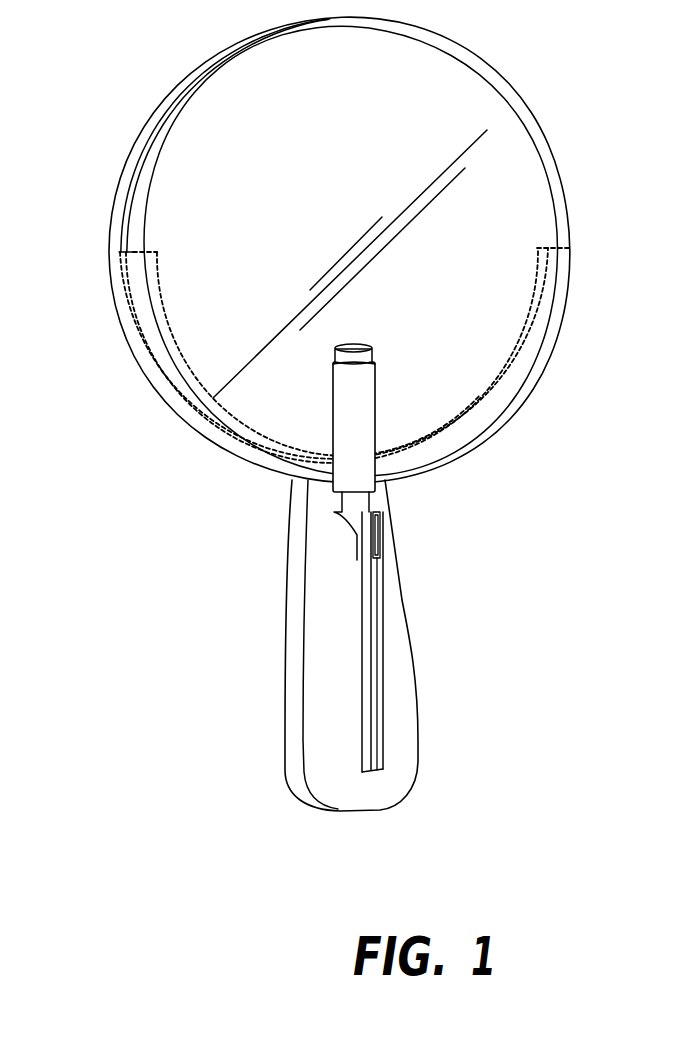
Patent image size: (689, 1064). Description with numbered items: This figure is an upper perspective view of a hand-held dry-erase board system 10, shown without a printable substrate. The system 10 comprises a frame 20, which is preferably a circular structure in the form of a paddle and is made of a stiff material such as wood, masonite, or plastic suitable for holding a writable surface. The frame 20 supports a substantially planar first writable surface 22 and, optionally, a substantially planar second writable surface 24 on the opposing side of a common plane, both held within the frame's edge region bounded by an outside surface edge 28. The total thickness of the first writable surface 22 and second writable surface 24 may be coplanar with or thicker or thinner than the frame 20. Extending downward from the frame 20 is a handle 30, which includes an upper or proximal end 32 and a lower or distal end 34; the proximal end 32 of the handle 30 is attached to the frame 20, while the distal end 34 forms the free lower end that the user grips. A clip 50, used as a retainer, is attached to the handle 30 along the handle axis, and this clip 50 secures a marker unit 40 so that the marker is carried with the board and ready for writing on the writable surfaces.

The hand-held dry-erase board system 10 is at (564, 631).
The frame 20 is at (318, 250).
The first writable surface 22 is at (505, 142).
The second writable surface 24 is at (112, 199).
The outside surface edge 28 is at (137, 262).
The handle 30 is at (332, 577).
The proximal end 32 is at (322, 507).
The distal end 34 is at (382, 787).
The marker unit 40 is at (357, 508).
The clip 50 is at (379, 537).